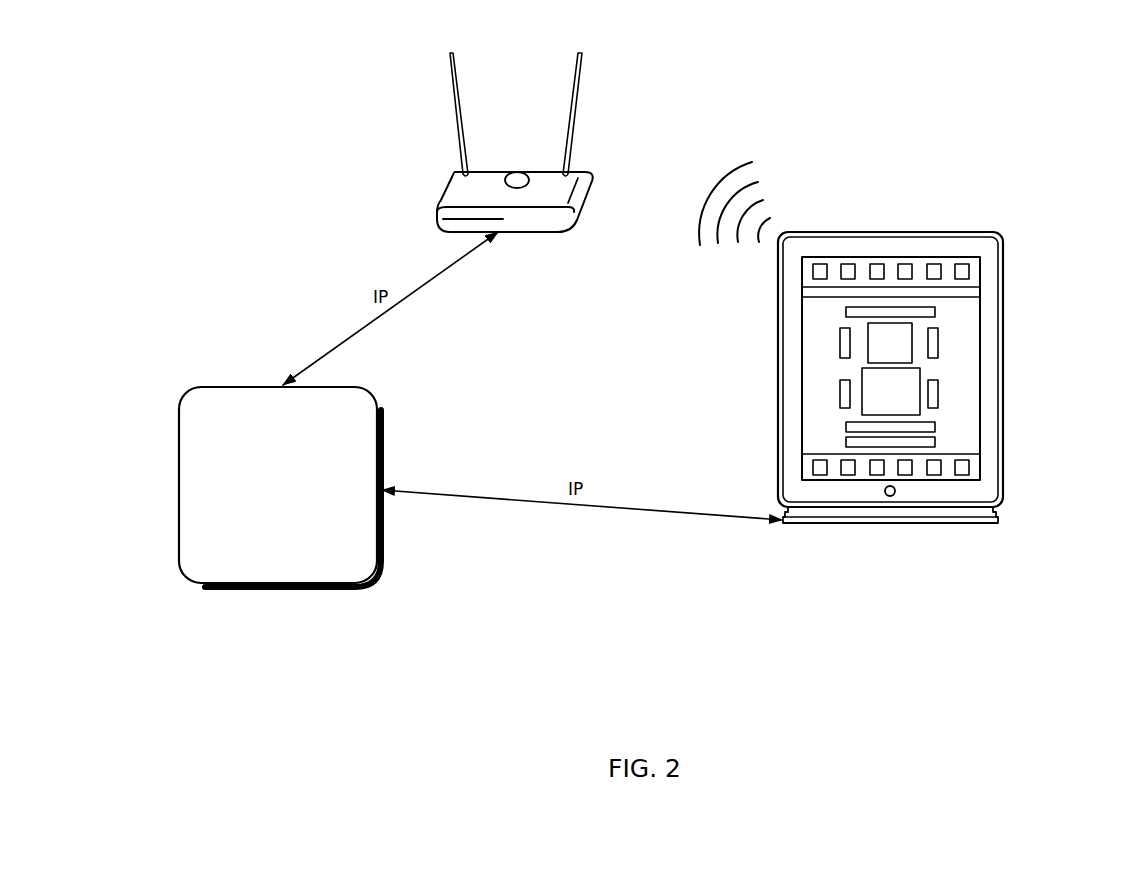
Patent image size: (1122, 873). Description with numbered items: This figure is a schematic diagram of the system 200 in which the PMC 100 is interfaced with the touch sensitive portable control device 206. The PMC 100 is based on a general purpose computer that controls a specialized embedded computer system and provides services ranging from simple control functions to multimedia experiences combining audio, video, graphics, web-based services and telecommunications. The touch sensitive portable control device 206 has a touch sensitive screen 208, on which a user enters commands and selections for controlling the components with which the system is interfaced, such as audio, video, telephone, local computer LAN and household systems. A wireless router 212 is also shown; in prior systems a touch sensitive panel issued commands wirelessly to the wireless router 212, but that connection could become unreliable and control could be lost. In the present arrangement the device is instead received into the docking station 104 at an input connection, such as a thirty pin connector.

The PMC 100 is at (332, 588).
The docking station 104 is at (948, 525).
The system 200 is at (1087, 685).
The touch sensitive portable control device 206 is at (905, 334).
The touch sensitive screen 208 is at (956, 398).
The wireless router 212 is at (530, 233).